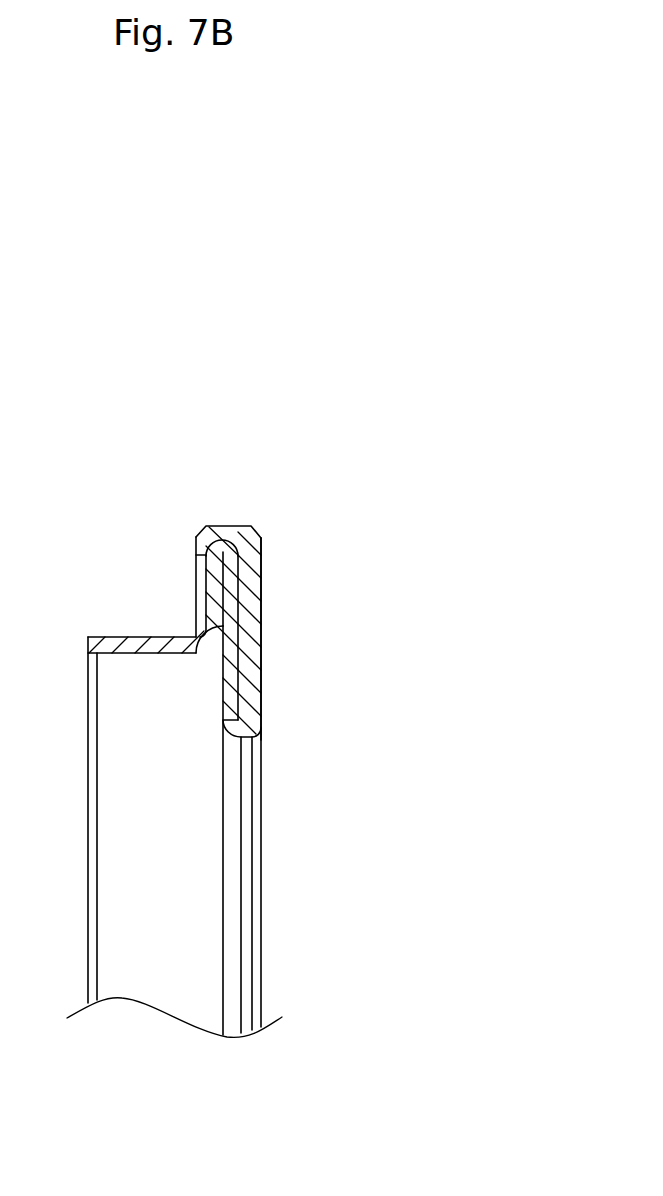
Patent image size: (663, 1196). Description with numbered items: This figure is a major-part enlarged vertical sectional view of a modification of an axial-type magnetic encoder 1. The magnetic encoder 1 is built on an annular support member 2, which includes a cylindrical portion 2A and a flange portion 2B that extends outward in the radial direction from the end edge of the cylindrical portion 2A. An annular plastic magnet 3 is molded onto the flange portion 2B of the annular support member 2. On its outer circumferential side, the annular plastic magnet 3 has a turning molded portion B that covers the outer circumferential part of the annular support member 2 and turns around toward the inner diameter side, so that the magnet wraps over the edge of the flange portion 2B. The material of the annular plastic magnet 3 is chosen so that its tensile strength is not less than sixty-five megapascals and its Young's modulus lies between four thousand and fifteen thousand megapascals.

The magnetic encoder 1 is at (275, 497).
The annular support member 2 is at (75, 508).
The cylindrical portion 2A is at (158, 647).
The flange portion 2B is at (206, 583).
The annular plastic magnet 3 is at (284, 653).
The turning molded portion B is at (236, 509).